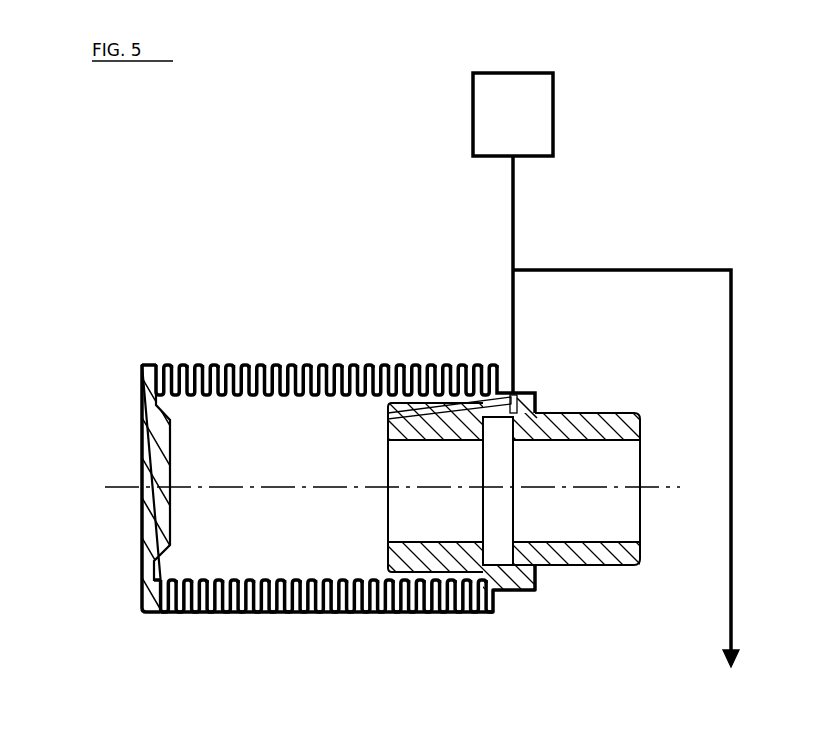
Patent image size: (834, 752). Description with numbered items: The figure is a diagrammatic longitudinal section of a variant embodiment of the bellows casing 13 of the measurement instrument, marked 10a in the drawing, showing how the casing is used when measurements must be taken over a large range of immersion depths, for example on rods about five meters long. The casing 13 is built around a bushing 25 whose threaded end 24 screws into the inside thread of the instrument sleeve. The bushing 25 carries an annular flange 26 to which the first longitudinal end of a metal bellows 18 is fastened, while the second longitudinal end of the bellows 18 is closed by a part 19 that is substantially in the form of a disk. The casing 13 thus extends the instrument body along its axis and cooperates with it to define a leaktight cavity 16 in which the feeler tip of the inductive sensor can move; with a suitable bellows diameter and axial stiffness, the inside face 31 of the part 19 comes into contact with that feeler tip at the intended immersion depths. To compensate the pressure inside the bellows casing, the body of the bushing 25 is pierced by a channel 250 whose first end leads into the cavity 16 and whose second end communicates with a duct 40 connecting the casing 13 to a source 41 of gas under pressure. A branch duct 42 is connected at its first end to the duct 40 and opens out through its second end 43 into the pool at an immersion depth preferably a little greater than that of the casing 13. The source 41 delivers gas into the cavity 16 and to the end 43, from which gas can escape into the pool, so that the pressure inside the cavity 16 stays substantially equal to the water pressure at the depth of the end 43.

The bellows assembly 10a is at (134, 443).
The casing 13 is at (253, 660).
The leaktight cavity 16 is at (222, 417).
The metal bellows 18 is at (168, 365).
The part 19 is at (150, 512).
The threaded end 24 is at (636, 413).
The bushing 25 is at (538, 400).
The annular flange 26 is at (486, 372).
The inside face 31 is at (174, 543).
The duct 40 is at (515, 233).
The source of gas under pressure 41 is at (526, 128).
The branch duct 42 is at (655, 270).
The second end 43 is at (738, 650).
The channel 250 is at (423, 440).